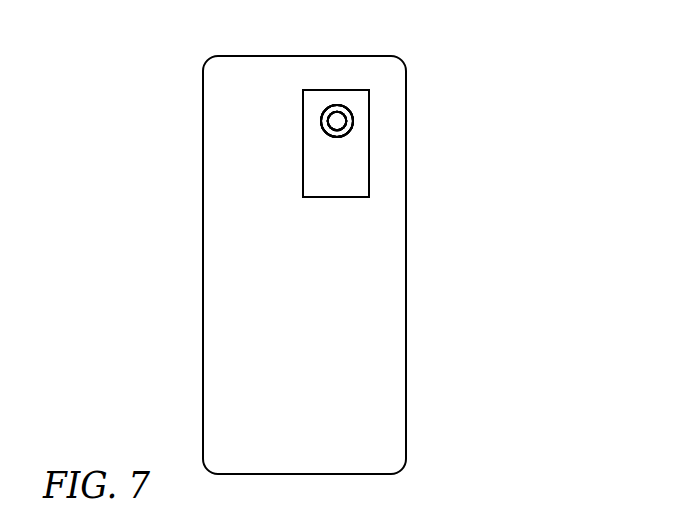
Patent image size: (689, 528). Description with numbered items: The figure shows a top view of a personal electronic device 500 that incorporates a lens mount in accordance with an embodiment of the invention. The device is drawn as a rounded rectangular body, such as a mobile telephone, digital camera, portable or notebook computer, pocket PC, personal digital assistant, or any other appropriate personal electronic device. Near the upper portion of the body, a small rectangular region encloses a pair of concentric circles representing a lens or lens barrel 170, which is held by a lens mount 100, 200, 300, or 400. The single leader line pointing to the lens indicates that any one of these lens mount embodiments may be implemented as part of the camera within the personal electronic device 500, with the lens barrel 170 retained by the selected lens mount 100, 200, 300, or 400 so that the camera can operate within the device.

The personal electronic device 500 is at (140, 75).
The lens barrel 170 is at (353, 117).
The lens mount 100 is at (413, 121).
The lens mount 200 is at (432, 121).
The lens mount 300 is at (451, 121).
The lens mount 400 is at (469, 121).